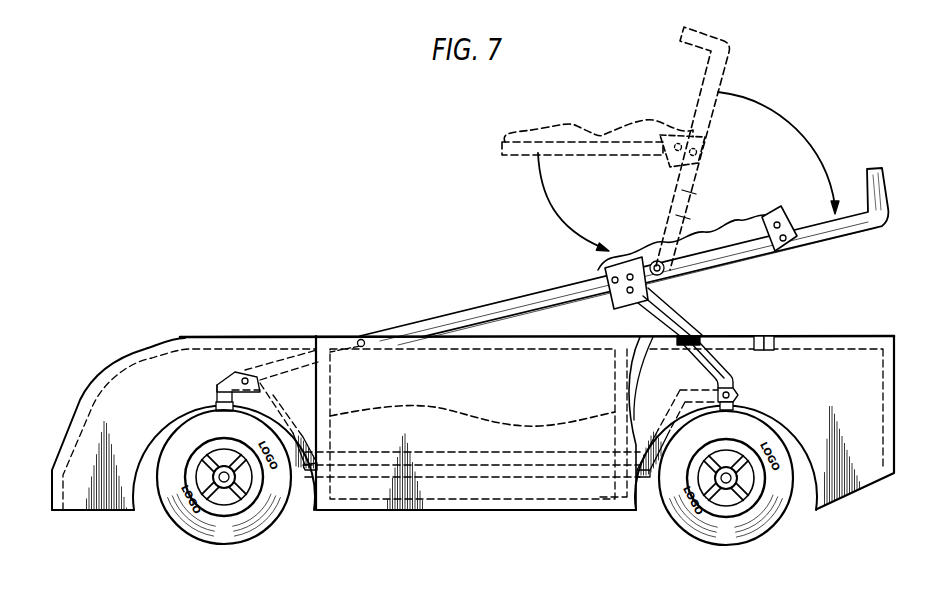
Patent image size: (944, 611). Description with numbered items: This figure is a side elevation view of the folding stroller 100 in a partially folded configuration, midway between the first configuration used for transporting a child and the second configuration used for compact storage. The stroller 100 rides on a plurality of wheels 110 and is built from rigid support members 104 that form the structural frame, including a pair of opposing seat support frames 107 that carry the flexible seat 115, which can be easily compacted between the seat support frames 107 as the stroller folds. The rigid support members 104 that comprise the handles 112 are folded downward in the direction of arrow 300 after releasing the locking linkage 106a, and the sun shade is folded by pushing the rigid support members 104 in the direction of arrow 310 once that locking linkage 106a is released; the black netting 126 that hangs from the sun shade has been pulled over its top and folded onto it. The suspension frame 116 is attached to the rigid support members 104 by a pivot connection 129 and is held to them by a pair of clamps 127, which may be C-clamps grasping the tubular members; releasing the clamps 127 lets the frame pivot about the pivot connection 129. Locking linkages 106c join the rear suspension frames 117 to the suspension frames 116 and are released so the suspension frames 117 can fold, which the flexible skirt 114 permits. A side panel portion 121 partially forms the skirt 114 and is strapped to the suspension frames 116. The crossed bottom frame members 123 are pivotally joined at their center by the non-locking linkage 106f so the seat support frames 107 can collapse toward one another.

The stroller 100 is at (262, 255).
The rigid support members 104 is at (722, 218).
The locking linkage 106a is at (798, 247).
The locking linkages 106c is at (775, 340).
The linkage 106f is at (480, 480).
The seat support frames 107 is at (443, 311).
The wheels 110 is at (262, 540).
The handles 112 is at (868, 187).
The skirt 114 is at (123, 389).
The seat 115 is at (500, 420).
The suspension frame 116 is at (270, 336).
The suspension frames 117 is at (895, 384).
The side panel portion 121 is at (562, 513).
The bottom frame members 123 is at (380, 452).
The black netting 126 is at (603, 253).
The clamps 127 is at (692, 336).
The pivot connection 129 is at (360, 340).
The arrow 300 is at (745, 95).
The arrow 310 is at (548, 200).